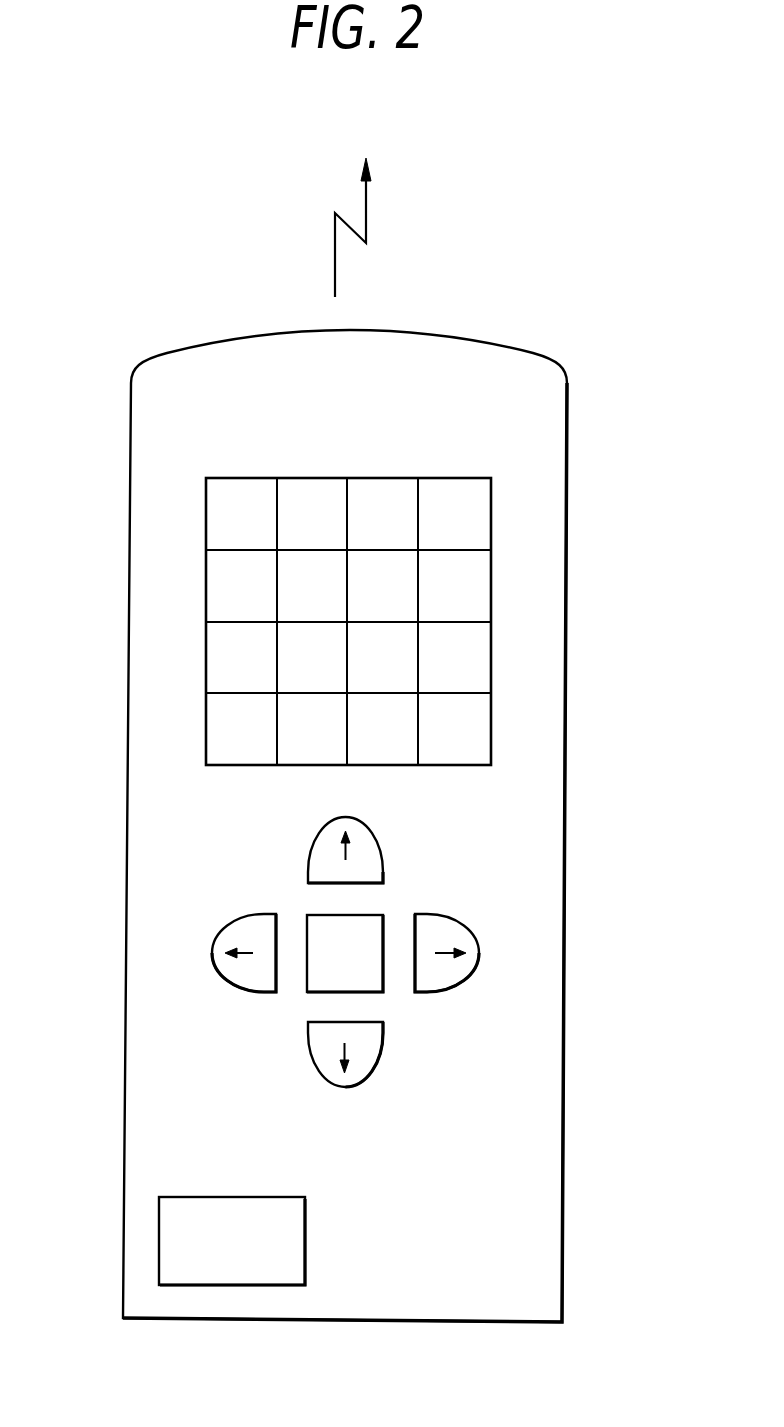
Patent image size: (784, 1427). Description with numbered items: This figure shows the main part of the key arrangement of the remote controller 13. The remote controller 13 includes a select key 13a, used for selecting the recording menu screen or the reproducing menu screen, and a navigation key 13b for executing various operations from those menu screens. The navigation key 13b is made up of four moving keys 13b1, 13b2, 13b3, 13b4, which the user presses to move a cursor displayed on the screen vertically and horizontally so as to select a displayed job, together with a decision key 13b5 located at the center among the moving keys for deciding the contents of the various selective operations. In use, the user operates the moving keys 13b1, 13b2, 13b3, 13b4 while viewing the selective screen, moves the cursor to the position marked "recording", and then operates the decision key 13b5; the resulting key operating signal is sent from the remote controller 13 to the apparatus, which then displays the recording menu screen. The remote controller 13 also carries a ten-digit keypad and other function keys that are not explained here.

The remote controller 13 is at (567, 672).
The select key 13a is at (159, 1240).
The navigation key 13b is at (218, 917).
The moving key 13b1 is at (373, 835).
The moving key 13b2 is at (383, 1038).
The moving key 13b3 is at (210, 953).
The moving key 13b4 is at (480, 953).
The decision key 13b5 is at (372, 913).